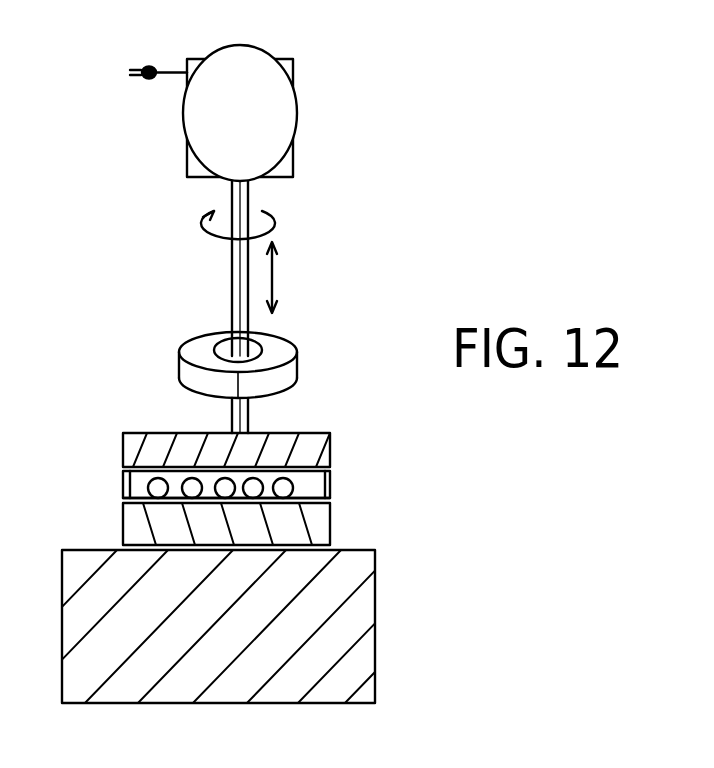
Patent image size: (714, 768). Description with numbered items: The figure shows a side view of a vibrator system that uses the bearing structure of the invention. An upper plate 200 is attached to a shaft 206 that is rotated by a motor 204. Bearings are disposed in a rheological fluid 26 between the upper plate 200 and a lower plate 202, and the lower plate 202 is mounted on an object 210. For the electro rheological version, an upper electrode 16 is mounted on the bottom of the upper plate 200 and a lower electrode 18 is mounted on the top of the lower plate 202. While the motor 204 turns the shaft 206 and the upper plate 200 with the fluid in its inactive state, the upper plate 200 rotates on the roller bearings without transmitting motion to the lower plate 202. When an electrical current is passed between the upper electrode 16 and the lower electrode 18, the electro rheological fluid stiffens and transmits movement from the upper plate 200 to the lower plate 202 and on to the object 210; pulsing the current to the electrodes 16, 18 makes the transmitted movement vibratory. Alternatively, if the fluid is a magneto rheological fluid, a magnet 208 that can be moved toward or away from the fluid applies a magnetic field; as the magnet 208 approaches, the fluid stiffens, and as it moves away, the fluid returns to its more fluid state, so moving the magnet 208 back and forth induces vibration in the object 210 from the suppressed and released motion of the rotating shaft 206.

The motor 204 is at (270, 112).
The shaft 206 is at (236, 210).
The magnet 208 is at (277, 350).
The upper plate 200 is at (308, 450).
The upper electrode 16 is at (183, 450).
The rheological fluid 26 is at (190, 488).
The lower electrode 18 is at (140, 498).
The lower plate 202 is at (312, 532).
The object 210 is at (352, 625).